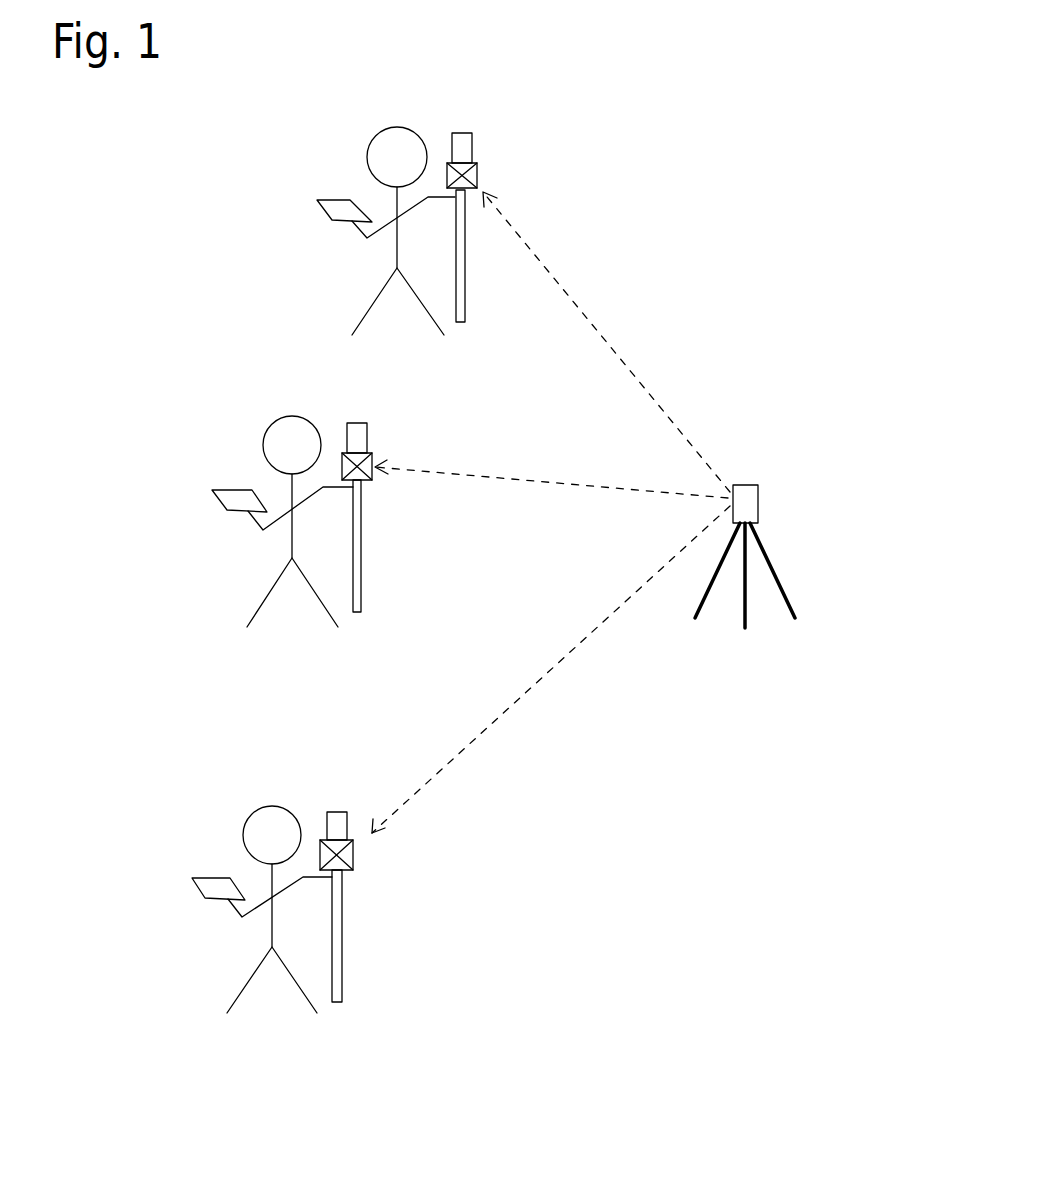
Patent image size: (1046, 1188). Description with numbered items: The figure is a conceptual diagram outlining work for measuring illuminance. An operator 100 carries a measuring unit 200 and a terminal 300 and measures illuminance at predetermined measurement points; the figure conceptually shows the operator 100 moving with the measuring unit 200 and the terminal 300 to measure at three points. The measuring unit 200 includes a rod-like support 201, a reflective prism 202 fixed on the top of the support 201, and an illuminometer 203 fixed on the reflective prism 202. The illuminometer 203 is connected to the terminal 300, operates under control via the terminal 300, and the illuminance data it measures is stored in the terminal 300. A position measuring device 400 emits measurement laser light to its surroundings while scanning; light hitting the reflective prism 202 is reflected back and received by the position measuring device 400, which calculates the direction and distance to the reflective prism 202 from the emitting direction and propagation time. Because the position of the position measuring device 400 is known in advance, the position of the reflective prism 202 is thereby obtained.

The operator 100 is at (257, 562).
The measuring unit 200 is at (422, 502).
The support 201 is at (362, 523).
The reflective prism 202 is at (373, 455).
The illuminometer 203 is at (367, 430).
The terminal 300 is at (212, 488).
The position measuring device 400 is at (770, 493).